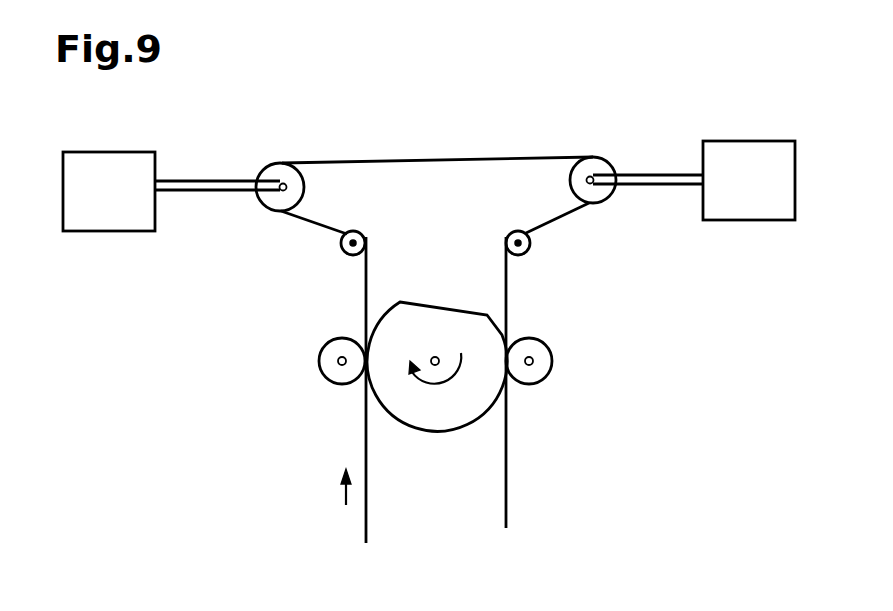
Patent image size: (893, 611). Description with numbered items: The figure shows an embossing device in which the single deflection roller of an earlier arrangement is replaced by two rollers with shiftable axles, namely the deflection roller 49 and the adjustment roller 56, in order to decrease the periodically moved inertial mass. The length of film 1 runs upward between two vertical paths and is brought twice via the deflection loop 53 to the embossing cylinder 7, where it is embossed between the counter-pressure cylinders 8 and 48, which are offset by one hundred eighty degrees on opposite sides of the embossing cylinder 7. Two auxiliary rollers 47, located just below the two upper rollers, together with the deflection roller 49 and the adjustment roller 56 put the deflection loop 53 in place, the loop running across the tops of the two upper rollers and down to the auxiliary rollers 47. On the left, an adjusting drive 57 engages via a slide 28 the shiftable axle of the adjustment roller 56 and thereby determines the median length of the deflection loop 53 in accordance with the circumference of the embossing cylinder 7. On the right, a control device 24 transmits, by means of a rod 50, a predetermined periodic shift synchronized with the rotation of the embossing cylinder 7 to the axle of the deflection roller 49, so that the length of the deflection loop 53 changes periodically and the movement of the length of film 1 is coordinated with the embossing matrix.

The length of film 1 is at (365, 441).
The embossing cylinder 7 is at (434, 412).
The counter-pressure cylinder 8 is at (320, 359).
The control device 24 is at (760, 157).
The slide 28 is at (203, 195).
The auxiliary rollers 47 is at (362, 236).
The counter-pressure cylinder 48 is at (553, 358).
The deflection roller 49 is at (598, 167).
The rod 50 is at (661, 186).
The deflection loop 53 is at (345, 161).
The adjustment roller 56 is at (275, 172).
The adjusting drive 57 is at (103, 167).